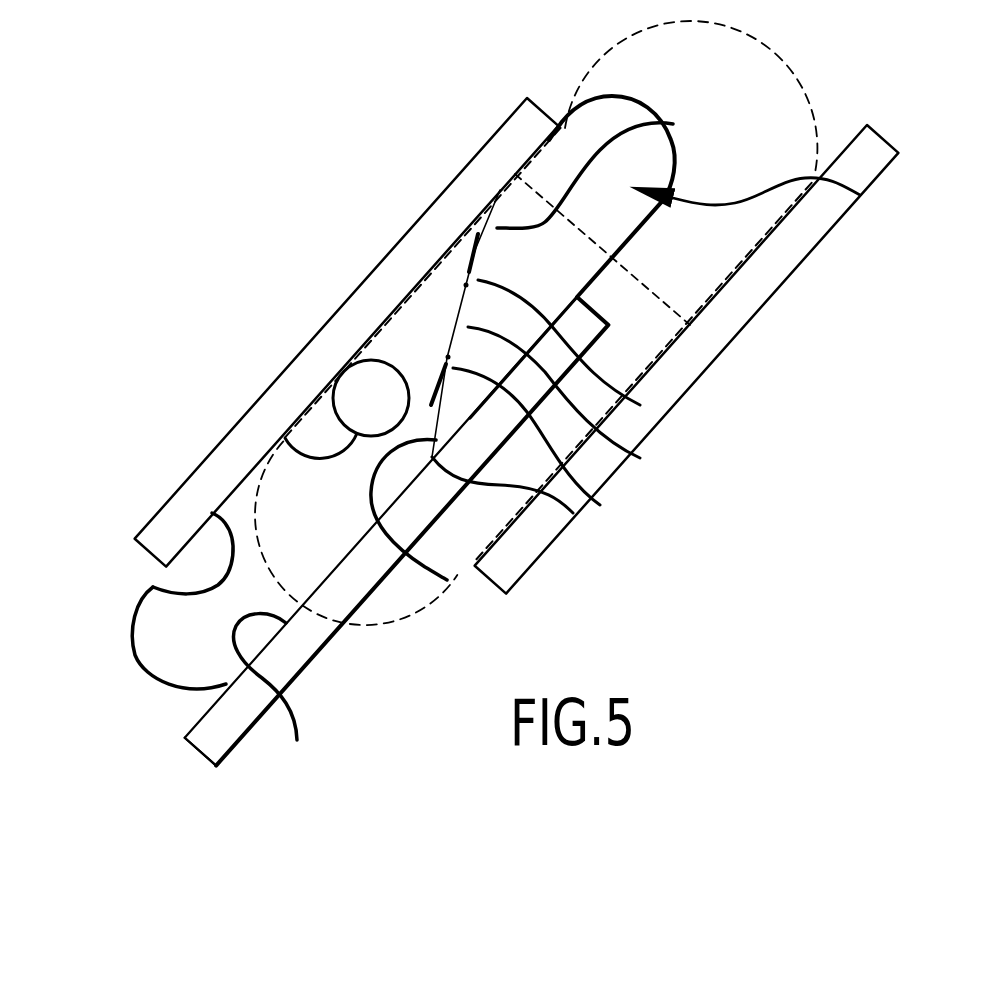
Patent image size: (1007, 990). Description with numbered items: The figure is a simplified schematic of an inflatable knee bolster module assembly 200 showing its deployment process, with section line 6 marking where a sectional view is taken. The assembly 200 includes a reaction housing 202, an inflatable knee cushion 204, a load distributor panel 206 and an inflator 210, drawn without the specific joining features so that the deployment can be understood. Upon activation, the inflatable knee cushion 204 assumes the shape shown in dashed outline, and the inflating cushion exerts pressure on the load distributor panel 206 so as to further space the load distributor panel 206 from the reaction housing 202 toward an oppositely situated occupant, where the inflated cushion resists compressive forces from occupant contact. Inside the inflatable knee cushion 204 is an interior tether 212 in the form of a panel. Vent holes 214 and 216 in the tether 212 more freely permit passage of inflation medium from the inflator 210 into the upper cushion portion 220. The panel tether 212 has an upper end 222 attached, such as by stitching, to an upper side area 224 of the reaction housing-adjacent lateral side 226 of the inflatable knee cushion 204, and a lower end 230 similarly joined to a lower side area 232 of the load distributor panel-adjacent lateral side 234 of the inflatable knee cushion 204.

The inflatable knee bolster module assembly 200 is at (266, 97).
The reaction housing 202 is at (517, 127).
The inflatable knee cushion 204 is at (143, 666).
The load distributor panel 206 is at (197, 752).
The inflator 210 is at (285, 438).
The interior tether 212 is at (640, 458).
The vent hole 214 is at (640, 405).
The vent hole 216 is at (600, 505).
The upper cushion portion 220 is at (860, 195).
The upper end 222 is at (673, 124).
The upper side area 224 is at (500, 190).
The reaction housing-adjacent lateral side 226 is at (153, 587).
The lower end 230 is at (447, 580).
The lower side area 232 is at (573, 513).
The load distributor panel-adjacent lateral side 234 is at (297, 740).
The section line 6- 6 is at (468, 246).